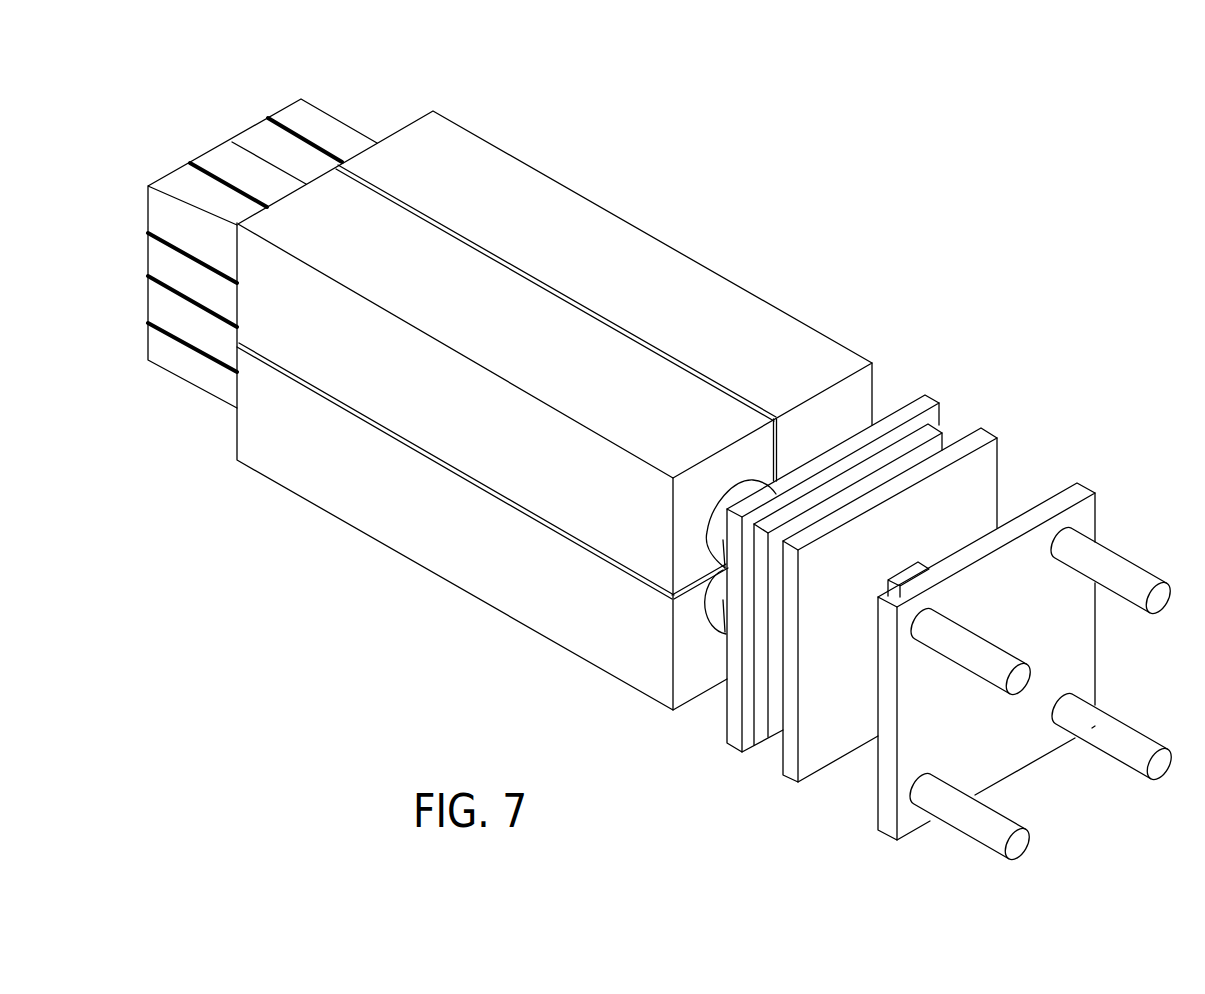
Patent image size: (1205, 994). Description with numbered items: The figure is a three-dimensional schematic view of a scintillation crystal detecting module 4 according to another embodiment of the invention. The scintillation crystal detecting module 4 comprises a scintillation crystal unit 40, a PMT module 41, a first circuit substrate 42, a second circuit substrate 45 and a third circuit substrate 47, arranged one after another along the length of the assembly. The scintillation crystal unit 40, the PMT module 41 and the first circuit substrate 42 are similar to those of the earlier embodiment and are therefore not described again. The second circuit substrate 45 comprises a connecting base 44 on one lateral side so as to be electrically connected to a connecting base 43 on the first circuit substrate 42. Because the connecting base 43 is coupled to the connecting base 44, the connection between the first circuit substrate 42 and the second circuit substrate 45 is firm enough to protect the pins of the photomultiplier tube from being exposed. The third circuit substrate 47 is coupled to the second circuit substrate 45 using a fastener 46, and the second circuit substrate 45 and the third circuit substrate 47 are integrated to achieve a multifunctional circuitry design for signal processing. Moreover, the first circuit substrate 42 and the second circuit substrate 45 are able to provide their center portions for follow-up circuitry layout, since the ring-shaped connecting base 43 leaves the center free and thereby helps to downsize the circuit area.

The scintillation crystal detecting module 4 is at (121, 152).
The scintillation crystal unit 40 is at (257, 137).
The PMT module 41 is at (471, 206).
The first circuit substrate 42 is at (923, 403).
The connecting base 43 is at (760, 588).
The connecting base 44 is at (777, 672).
The second circuit substrate 45 is at (980, 495).
The fastener 46 is at (910, 571).
The third circuit substrate 47 is at (1075, 618).